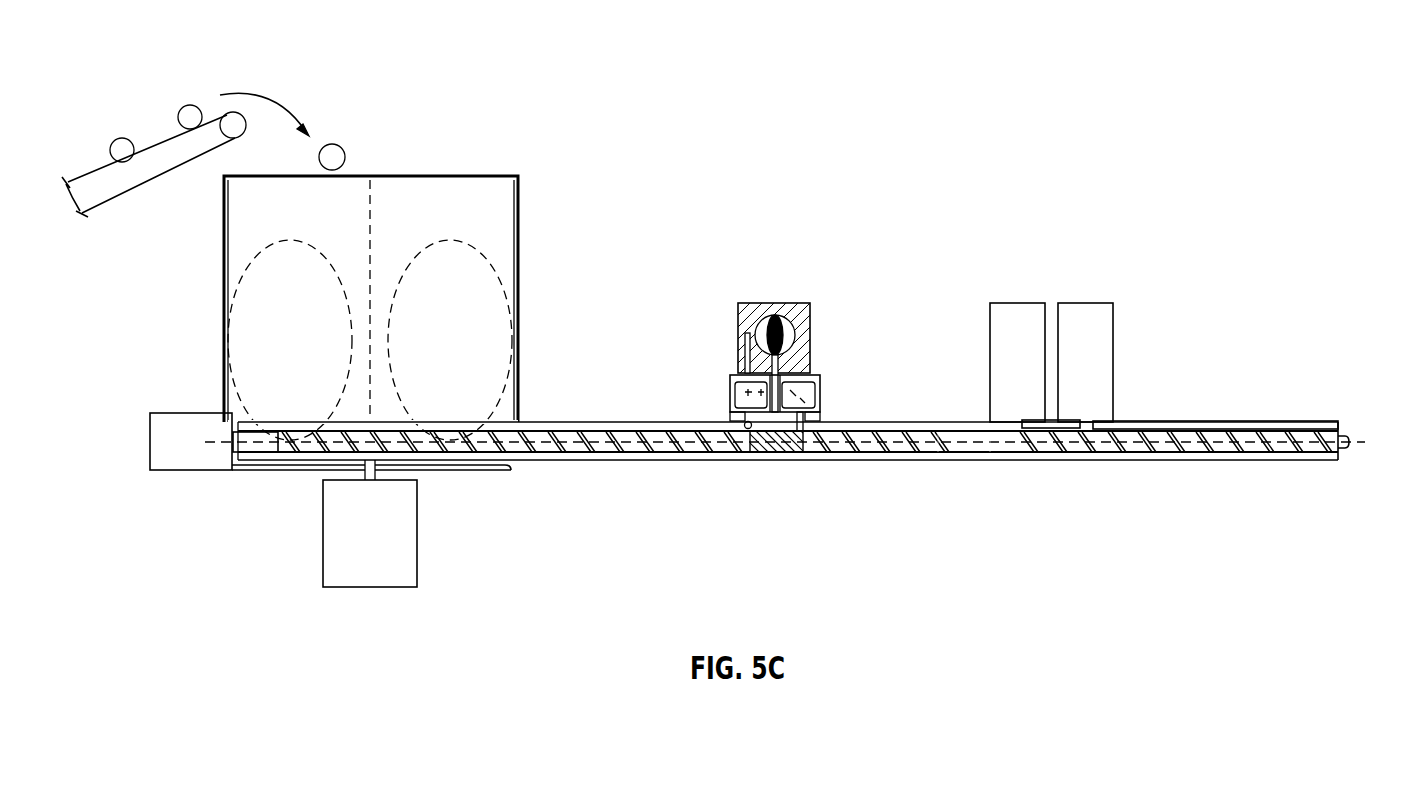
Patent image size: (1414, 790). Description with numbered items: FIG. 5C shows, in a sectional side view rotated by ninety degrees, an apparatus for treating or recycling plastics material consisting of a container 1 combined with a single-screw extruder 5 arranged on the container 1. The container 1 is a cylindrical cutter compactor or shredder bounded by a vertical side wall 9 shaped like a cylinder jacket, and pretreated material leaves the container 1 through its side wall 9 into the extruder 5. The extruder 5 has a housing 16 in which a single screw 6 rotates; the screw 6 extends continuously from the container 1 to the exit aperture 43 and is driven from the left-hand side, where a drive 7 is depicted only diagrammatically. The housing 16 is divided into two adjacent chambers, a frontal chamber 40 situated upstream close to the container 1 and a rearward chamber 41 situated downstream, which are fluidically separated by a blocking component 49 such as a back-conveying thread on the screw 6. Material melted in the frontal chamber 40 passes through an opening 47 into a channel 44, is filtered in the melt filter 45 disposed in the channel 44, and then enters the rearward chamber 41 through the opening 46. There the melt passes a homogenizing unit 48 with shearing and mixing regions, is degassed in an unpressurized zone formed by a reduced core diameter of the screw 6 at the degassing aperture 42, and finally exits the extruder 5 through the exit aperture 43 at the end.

The container 1 is at (496, 150).
The single-screw extruder 5 is at (609, 385).
The screw 6 is at (435, 447).
The drive motor 7 is at (315, 445).
The side wall 9 is at (518, 246).
The housing 16 is at (567, 460).
The frontal chamber 40 is at (667, 470).
The rearward chamber 41 is at (1013, 478).
The degassing aperture 42 is at (1015, 428).
The exit aperture 43 is at (1340, 424).
The channel 44 is at (745, 392).
The melt filter 45 is at (777, 312).
The opening 46 is at (800, 410).
The opening 47 is at (744, 422).
The homogenizing unit 48 is at (975, 455).
The blocking component 49 is at (783, 452).